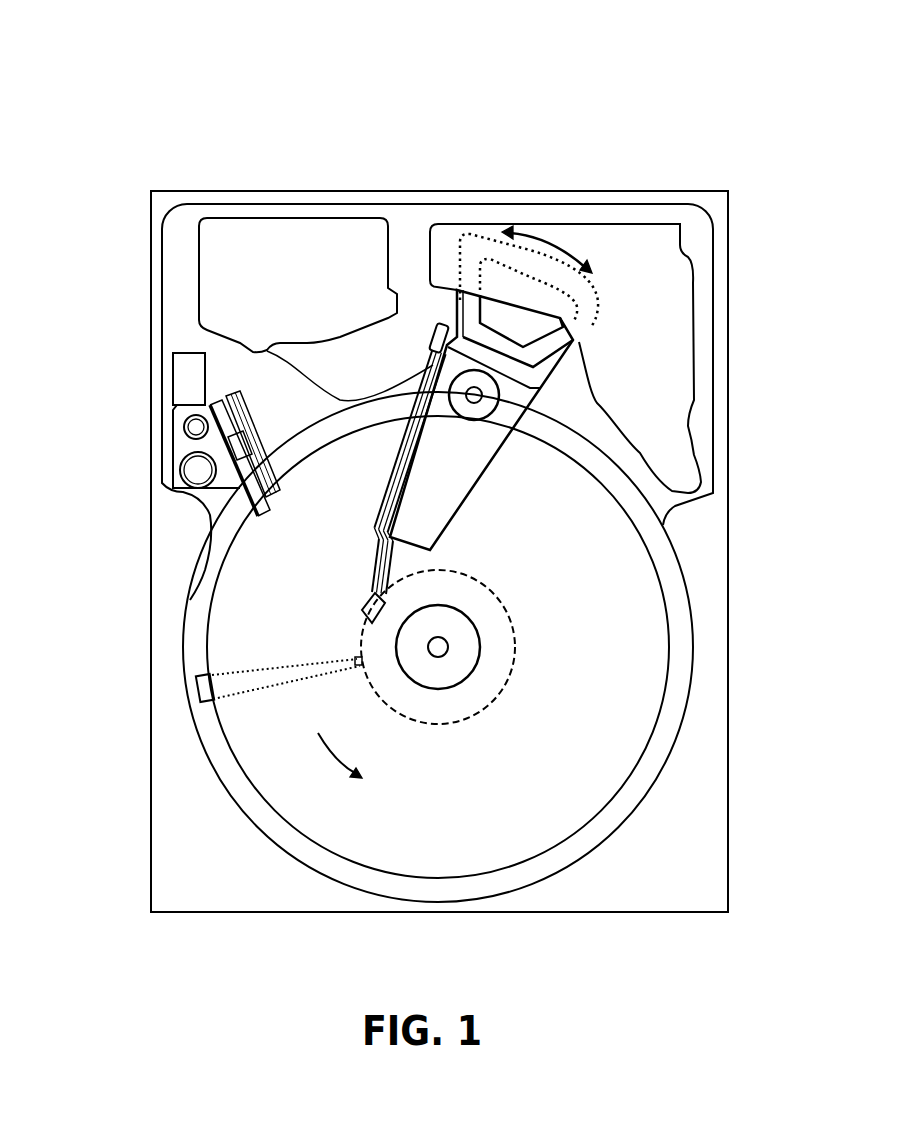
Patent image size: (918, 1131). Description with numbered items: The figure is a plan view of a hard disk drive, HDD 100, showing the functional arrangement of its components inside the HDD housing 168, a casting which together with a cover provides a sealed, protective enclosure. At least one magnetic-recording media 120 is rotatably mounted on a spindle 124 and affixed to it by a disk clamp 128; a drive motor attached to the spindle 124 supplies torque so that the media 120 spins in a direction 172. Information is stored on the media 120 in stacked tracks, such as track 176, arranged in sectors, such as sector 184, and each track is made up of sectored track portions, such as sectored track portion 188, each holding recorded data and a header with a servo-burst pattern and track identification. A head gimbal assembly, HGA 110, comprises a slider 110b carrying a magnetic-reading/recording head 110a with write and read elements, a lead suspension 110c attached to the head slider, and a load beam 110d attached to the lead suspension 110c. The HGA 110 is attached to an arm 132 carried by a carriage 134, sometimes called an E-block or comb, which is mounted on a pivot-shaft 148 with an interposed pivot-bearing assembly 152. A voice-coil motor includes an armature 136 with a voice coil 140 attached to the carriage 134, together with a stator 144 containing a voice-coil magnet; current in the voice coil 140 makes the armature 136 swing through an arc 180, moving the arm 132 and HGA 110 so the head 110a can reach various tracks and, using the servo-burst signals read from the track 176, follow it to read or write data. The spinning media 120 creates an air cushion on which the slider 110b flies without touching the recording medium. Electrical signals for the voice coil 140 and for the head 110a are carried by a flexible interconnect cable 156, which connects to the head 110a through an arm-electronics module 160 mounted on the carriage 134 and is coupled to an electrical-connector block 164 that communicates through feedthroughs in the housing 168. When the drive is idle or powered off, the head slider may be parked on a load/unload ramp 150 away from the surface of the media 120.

The hard disk drive 100 is at (89, 90).
The head gimbal assembly 110 is at (85, 470).
The magnetic-reading/recording head 110a is at (365, 615).
The slider 110b is at (378, 592).
The lead suspension 110c is at (371, 553).
The load beam 110d is at (371, 531).
The magnetic-recording media 120 is at (603, 602).
The spindle 124 is at (440, 647).
The disk clamp 128 is at (463, 662).
The arm 132 is at (433, 500).
The carriage 134 is at (485, 428).
The armature 136 is at (453, 308).
The voice coil 140 is at (470, 298).
The stator 144 is at (663, 306).
The pivot-shaft 148 is at (483, 395).
The load/unload ramp 150 is at (172, 445).
The pivot-bearing assembly 152 is at (492, 410).
The flexible interconnect cable 156 is at (307, 372).
The arm-electronics module 160 is at (433, 362).
The electrical-connector block 164 is at (220, 283).
The HDD housing 168 is at (713, 205).
The direction 172 is at (361, 752).
The track 176 is at (507, 612).
The arc 180 is at (550, 243).
The sector 184 is at (200, 682).
The sectored track portion 188 is at (355, 660).